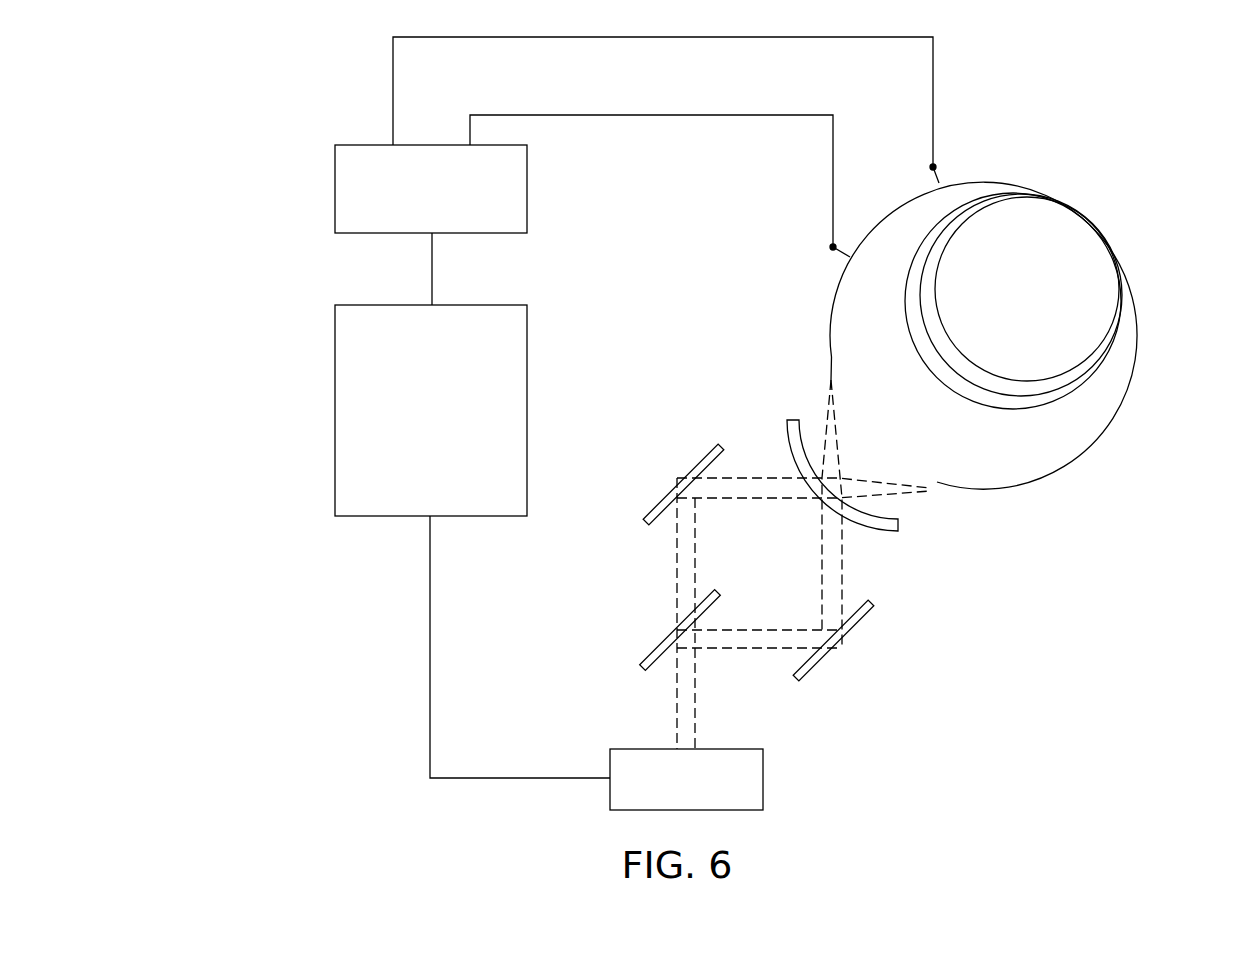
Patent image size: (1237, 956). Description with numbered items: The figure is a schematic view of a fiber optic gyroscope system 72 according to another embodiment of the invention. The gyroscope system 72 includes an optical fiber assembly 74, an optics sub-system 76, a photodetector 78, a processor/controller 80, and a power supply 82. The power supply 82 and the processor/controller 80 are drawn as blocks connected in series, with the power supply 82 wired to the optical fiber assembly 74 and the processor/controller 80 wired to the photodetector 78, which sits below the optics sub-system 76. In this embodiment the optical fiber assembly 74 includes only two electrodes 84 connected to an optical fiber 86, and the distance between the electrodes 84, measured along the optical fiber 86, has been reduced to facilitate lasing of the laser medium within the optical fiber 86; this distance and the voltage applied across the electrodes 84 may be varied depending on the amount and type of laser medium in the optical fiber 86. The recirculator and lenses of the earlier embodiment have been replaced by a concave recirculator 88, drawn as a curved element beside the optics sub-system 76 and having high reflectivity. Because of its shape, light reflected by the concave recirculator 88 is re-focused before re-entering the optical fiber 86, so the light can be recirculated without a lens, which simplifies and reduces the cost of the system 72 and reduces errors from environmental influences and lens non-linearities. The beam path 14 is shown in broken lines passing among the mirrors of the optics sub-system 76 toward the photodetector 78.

The gyroscope system 72 is at (265, 165).
The power supply 82 is at (415, 204).
The processor/controller 80 is at (417, 425).
The photodetector 78 is at (672, 794).
The optical fiber assembly 74 is at (1013, 293).
The electrodes 84 is at (933, 167).
The optical fiber 86 is at (1138, 337).
The concave recirculator 88 is at (788, 430).
The beam delivery optics 14 is at (708, 412).
The optics sub-system 76 is at (933, 570).